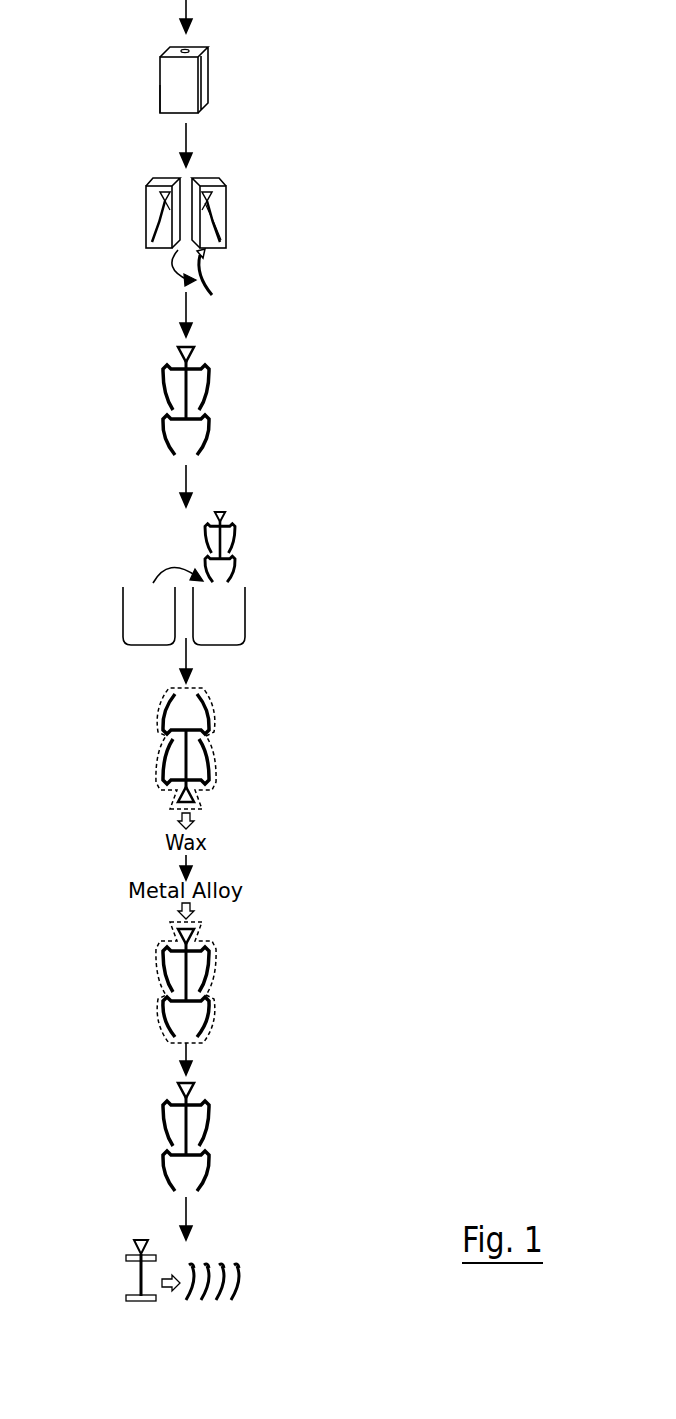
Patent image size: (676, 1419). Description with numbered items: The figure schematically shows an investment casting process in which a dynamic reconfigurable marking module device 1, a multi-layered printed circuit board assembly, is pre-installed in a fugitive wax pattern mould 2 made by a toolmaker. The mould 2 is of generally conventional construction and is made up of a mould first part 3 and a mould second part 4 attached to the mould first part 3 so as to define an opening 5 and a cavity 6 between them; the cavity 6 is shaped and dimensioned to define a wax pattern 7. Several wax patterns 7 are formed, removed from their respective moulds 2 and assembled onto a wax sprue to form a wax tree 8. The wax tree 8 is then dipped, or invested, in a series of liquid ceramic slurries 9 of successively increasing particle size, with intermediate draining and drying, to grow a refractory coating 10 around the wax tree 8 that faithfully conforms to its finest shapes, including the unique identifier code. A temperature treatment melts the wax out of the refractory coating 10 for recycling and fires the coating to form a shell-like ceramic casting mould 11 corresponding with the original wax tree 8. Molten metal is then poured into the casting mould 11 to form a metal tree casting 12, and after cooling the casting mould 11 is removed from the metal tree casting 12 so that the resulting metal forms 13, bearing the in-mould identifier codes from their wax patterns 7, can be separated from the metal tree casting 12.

The dynamic reconfigurable marking module device 1 is at (222, 84).
The pattern mould 2 is at (158, 113).
The mould first part 3 is at (146, 228).
The mould second part 4 is at (226, 232).
The opening 5 is at (190, 50).
The cavity 6 is at (208, 212).
The wax pattern 7 is at (212, 290).
The wax tree 8 is at (228, 392).
The liquid ceramic slurries 9 is at (132, 625).
The refractory coating 10 is at (207, 541).
The ceramic casting mould 11 is at (212, 768).
The metal tree casting 12 is at (160, 947).
The metal forms 13 is at (243, 1288).